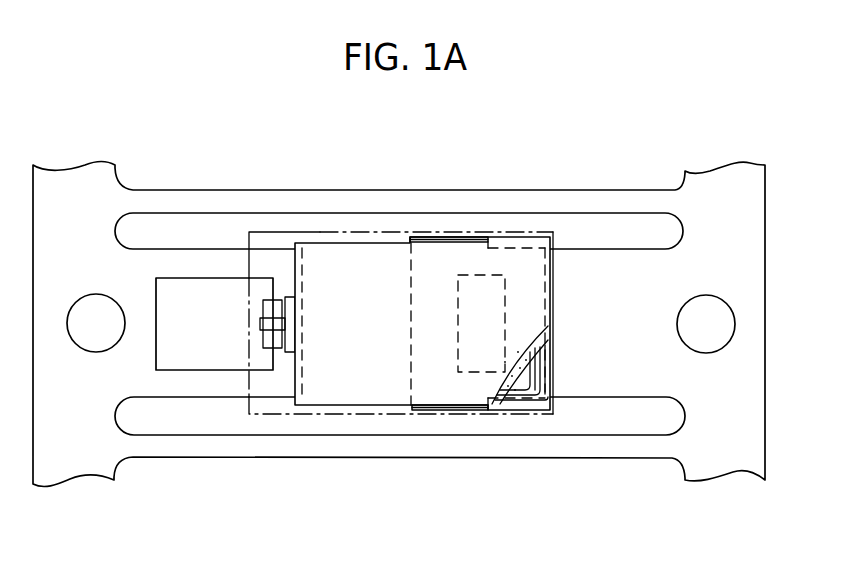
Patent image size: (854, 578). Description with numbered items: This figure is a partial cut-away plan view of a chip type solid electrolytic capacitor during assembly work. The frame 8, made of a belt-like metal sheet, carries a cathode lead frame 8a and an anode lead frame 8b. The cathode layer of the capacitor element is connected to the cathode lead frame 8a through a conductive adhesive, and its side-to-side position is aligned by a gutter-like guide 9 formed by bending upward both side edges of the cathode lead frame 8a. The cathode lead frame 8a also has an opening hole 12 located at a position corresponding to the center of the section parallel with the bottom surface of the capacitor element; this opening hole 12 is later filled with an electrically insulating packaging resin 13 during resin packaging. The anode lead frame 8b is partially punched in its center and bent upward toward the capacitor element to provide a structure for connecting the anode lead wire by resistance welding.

The frame 8 is at (730, 452).
The cathode lead frame 8a is at (608, 267).
The anode lead frame 8b is at (218, 388).
The gutter-like guide 9 is at (442, 236).
The opening hole 12 is at (487, 285).
The packaging resin 13 is at (543, 238).